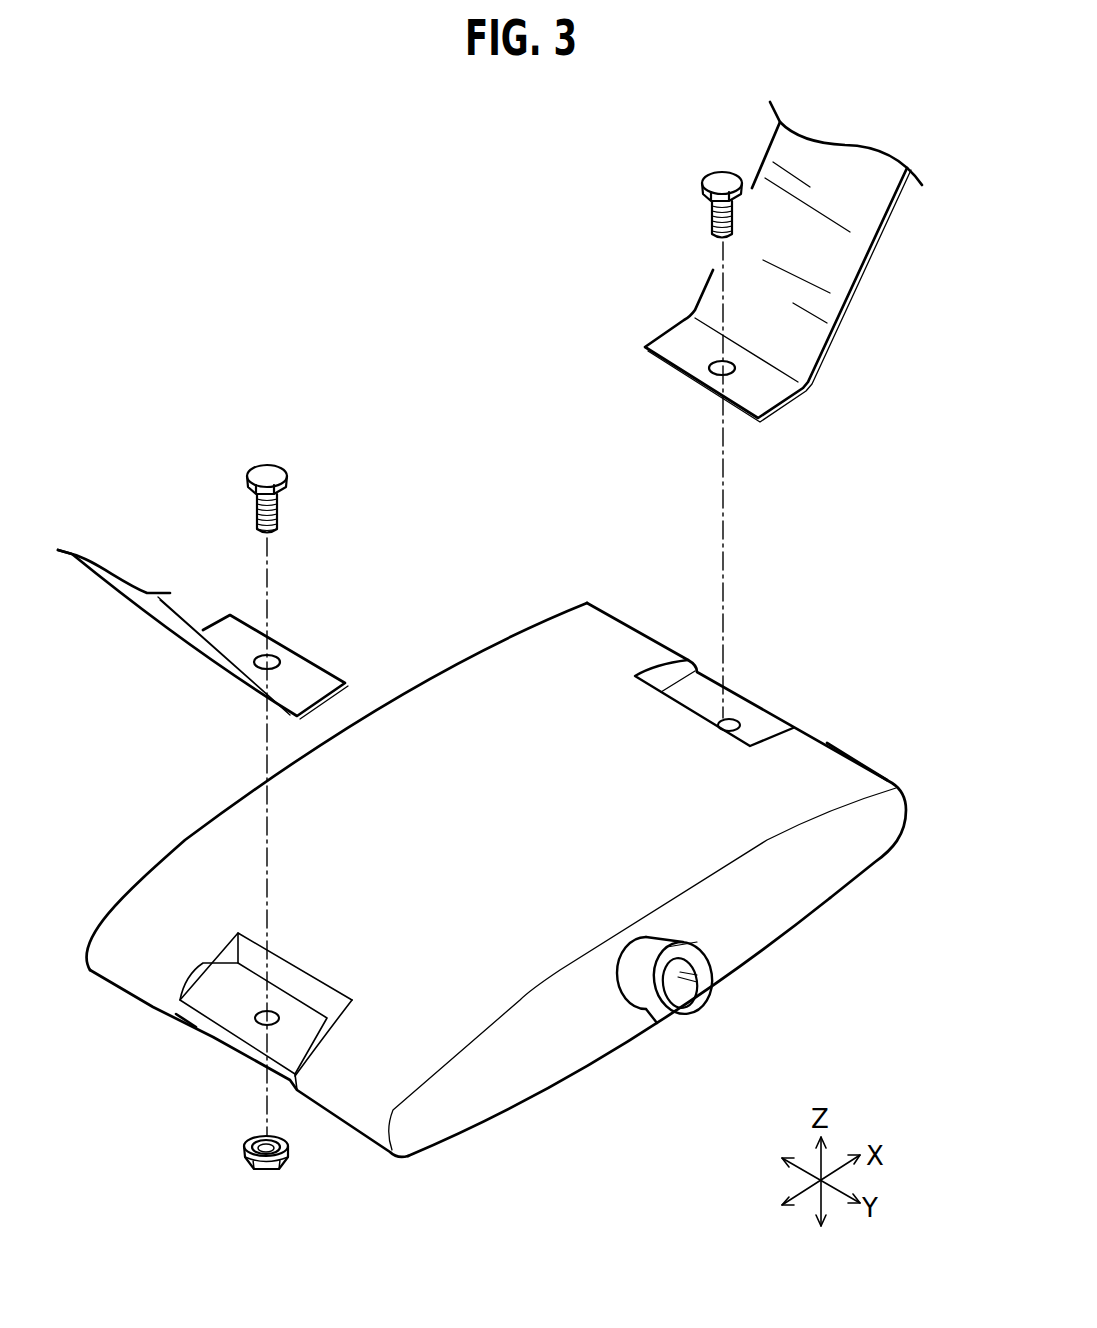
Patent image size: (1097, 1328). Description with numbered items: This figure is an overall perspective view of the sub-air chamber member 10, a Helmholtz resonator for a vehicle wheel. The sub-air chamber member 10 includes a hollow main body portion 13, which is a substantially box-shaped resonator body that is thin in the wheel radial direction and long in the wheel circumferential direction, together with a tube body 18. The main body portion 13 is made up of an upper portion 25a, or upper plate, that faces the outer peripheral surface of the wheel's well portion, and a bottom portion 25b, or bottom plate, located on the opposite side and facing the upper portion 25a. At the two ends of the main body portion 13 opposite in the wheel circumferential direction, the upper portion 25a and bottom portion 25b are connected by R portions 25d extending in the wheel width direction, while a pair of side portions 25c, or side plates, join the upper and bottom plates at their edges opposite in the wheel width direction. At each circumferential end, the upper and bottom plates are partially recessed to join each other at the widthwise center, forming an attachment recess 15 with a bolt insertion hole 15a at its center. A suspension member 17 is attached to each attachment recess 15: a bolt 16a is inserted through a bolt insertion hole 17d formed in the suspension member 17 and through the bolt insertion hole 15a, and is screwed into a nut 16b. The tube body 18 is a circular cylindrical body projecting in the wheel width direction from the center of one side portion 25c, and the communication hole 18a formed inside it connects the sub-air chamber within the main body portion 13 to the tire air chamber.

The sub-air chamber member 10 is at (532, 854).
The main body portion 13 is at (828, 745).
The attachment recess 15 is at (700, 698).
The bolt insertion hole 15a is at (730, 720).
The bolt 16a is at (267, 472).
The nut 16b is at (263, 1169).
The suspension member 17 is at (837, 252).
The bolt insertion hole 17d is at (690, 353).
The tube body 18 is at (732, 972).
The communication hole 18a is at (672, 995).
The upper portion 25a is at (460, 702).
The bottom portion 25b is at (588, 1080).
The side portion 25c is at (178, 830).
The R portion 25d is at (892, 777).